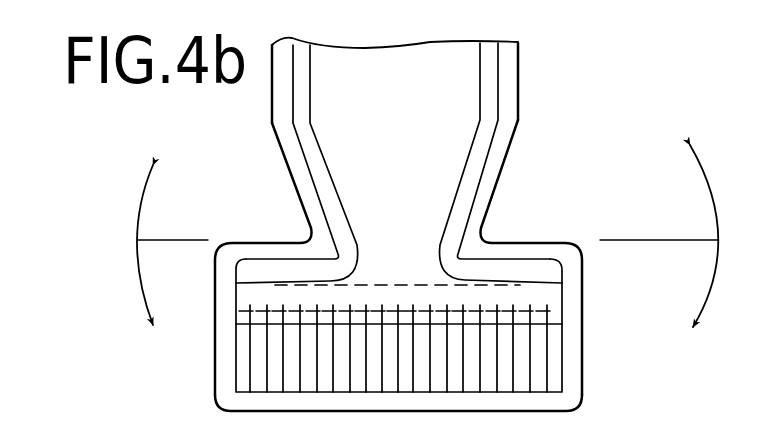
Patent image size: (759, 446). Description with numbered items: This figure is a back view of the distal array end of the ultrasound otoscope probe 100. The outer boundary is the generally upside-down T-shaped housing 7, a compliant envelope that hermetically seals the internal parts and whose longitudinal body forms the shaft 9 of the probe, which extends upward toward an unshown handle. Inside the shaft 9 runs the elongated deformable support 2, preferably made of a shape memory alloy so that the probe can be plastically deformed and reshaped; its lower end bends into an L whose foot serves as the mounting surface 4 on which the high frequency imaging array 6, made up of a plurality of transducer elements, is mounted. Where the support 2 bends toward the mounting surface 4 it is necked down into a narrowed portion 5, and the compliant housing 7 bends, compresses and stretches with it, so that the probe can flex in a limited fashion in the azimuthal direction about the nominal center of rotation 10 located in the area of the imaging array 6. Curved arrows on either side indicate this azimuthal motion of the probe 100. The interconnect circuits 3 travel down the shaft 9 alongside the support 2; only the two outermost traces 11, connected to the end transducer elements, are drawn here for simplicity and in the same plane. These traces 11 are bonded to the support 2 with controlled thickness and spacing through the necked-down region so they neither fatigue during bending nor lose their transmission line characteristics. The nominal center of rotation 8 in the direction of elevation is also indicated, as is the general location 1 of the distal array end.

The cleaning device 1 is at (578, 422).
The elongated deformable support 2 is at (508, 56).
The interconnect circuits 3 is at (420, 180).
The mounting surface 4 is at (533, 271).
The narrowed portion 5 is at (298, 210).
The imaging array 6 is at (490, 365).
The housing 7 is at (228, 398).
The nominal center of rotation in the direction of elevation 8 is at (506, 196).
The shaft 9 is at (262, 107).
The nominal center of rotation in the azimuthal direction 10 is at (405, 250).
The trace 11 is at (480, 101).
The ultrasound otoscope probe 100 is at (630, 170).